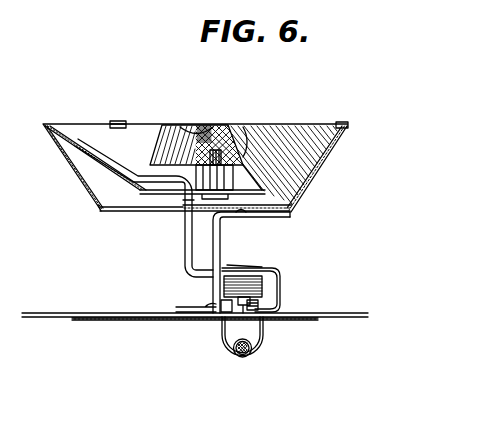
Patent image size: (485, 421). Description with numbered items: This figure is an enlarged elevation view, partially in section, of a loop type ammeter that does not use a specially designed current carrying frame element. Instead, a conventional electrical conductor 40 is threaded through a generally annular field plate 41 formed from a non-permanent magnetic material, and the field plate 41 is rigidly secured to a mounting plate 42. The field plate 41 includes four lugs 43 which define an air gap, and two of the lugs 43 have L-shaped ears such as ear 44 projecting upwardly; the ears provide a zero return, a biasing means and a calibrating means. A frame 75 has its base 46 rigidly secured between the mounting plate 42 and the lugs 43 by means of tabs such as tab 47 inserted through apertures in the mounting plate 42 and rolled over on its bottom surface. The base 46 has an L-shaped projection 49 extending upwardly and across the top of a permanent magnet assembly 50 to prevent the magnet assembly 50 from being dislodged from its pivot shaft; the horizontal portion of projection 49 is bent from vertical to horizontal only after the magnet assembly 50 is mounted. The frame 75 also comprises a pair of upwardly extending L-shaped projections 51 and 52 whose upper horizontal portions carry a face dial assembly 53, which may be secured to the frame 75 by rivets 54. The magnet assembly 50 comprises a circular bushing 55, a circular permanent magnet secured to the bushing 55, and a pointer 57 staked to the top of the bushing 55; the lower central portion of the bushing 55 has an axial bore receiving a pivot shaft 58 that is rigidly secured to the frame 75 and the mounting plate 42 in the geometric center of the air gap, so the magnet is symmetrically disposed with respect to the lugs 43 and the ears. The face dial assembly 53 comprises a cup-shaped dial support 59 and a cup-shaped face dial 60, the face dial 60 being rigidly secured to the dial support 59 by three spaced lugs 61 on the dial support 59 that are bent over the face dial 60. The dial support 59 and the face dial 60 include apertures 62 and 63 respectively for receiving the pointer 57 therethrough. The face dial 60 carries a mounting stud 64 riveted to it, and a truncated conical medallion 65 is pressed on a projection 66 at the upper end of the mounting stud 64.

The electrical conductor 40 is at (248, 352).
The field plate 41 is at (265, 350).
The mounting plate 42 is at (62, 318).
The lugs 43 is at (222, 320).
The L-shaped ear 44 is at (263, 288).
The base 46 is at (198, 308).
The tab 47 is at (193, 320).
The L-shaped projection 49 is at (265, 270).
The permanent magnet assembly 50 is at (280, 277).
The L-shaped projection 51 is at (220, 238).
The L-shaped projection 52 is at (247, 212).
The face dial assembly 53 is at (331, 163).
The rivets 54 is at (242, 216).
The bushing 55 is at (233, 304).
The pointer 57 is at (100, 148).
The pivot shaft 58 is at (237, 320).
The dial support 59 is at (97, 209).
The face dial 60 is at (140, 128).
The lugs 61 is at (114, 120).
The aperture 62 is at (130, 212).
The aperture 63 is at (184, 205).
The mounting stud 64 is at (260, 191).
The medallion 65 is at (228, 122).
The projection 66 is at (238, 127).
The frame 75 is at (222, 240).